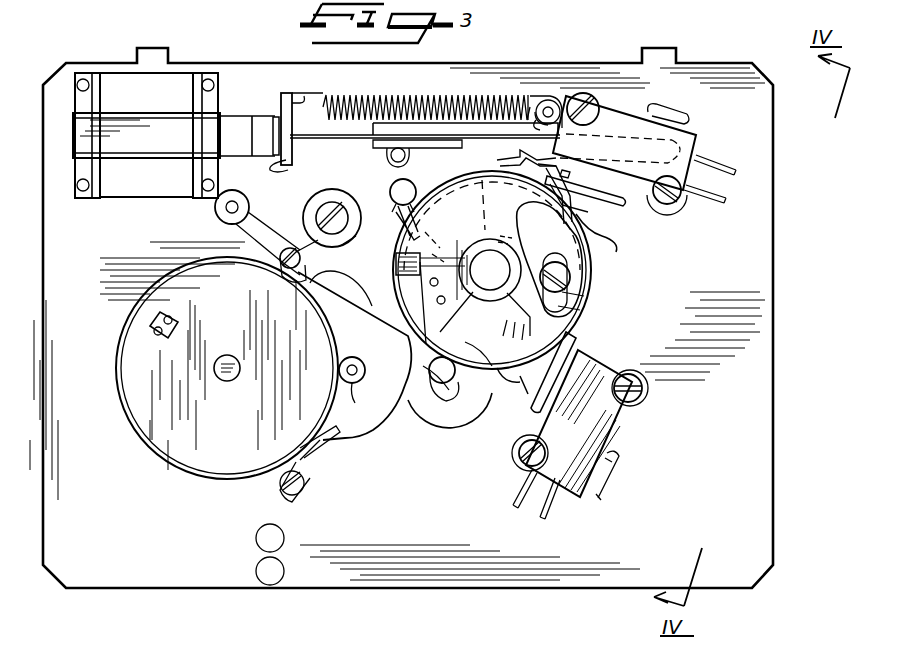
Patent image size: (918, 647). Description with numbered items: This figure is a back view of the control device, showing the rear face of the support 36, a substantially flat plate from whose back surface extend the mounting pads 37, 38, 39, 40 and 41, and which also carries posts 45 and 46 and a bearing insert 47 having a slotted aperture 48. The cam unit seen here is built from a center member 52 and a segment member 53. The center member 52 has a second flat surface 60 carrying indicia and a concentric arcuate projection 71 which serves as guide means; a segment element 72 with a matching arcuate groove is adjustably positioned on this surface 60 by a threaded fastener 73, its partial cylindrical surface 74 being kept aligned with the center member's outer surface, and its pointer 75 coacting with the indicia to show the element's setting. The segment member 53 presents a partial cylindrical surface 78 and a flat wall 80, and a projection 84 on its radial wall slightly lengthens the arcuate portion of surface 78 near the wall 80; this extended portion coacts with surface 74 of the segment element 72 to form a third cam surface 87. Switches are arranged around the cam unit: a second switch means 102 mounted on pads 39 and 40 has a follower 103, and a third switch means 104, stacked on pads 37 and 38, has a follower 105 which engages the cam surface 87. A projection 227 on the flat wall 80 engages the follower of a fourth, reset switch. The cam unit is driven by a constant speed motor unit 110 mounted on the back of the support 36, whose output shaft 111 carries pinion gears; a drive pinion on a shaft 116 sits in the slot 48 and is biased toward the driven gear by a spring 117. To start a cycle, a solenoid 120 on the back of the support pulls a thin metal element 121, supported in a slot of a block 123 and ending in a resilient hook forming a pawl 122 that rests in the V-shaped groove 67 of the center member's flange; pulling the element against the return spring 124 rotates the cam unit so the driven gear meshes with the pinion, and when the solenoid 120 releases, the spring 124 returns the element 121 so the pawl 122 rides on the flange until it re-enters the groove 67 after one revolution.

The support 36 is at (174, 578).
The mounting pad 37 is at (512, 462).
The mounting pad 38 is at (646, 398).
The mounting pad 39 is at (683, 210).
The mounting pad 40 is at (594, 96).
The mounting pad 41 is at (406, 159).
The post 45 is at (344, 202).
The post 46 is at (216, 210).
The bearing insert 47 is at (462, 404).
The slotted aperture 48 is at (444, 403).
The center member 52 is at (520, 384).
The segment member 53 is at (590, 248).
The second flat surface 60 is at (486, 326).
The V-shaped groove 67 is at (512, 152).
The arcuate projection 71 is at (500, 330).
The segment element 72 is at (550, 240).
The threaded fastener 73 is at (572, 276).
The partial cylindrical surface 74 is at (586, 288).
The pointer 75 is at (582, 306).
The partial cylindrical surface 78 is at (400, 236).
The flat wall 80 is at (480, 208).
The projection 84 is at (398, 268).
The third cam surface 87 is at (616, 250).
The second switch means 102 is at (696, 138).
The follower 103 is at (594, 202).
The third switch means 104 is at (594, 433).
The follower 105 is at (582, 348).
The constant speed motor unit 110 is at (224, 428).
The output shaft 111 is at (356, 392).
The shaft 116 is at (420, 402).
The spring 117 is at (396, 200).
The solenoid 120 is at (130, 192).
The thin metal element 121 is at (346, 138).
The pawl 122 is at (532, 176).
The block 123 is at (446, 128).
The return spring 124 is at (424, 96).
The projection 227 is at (434, 212).